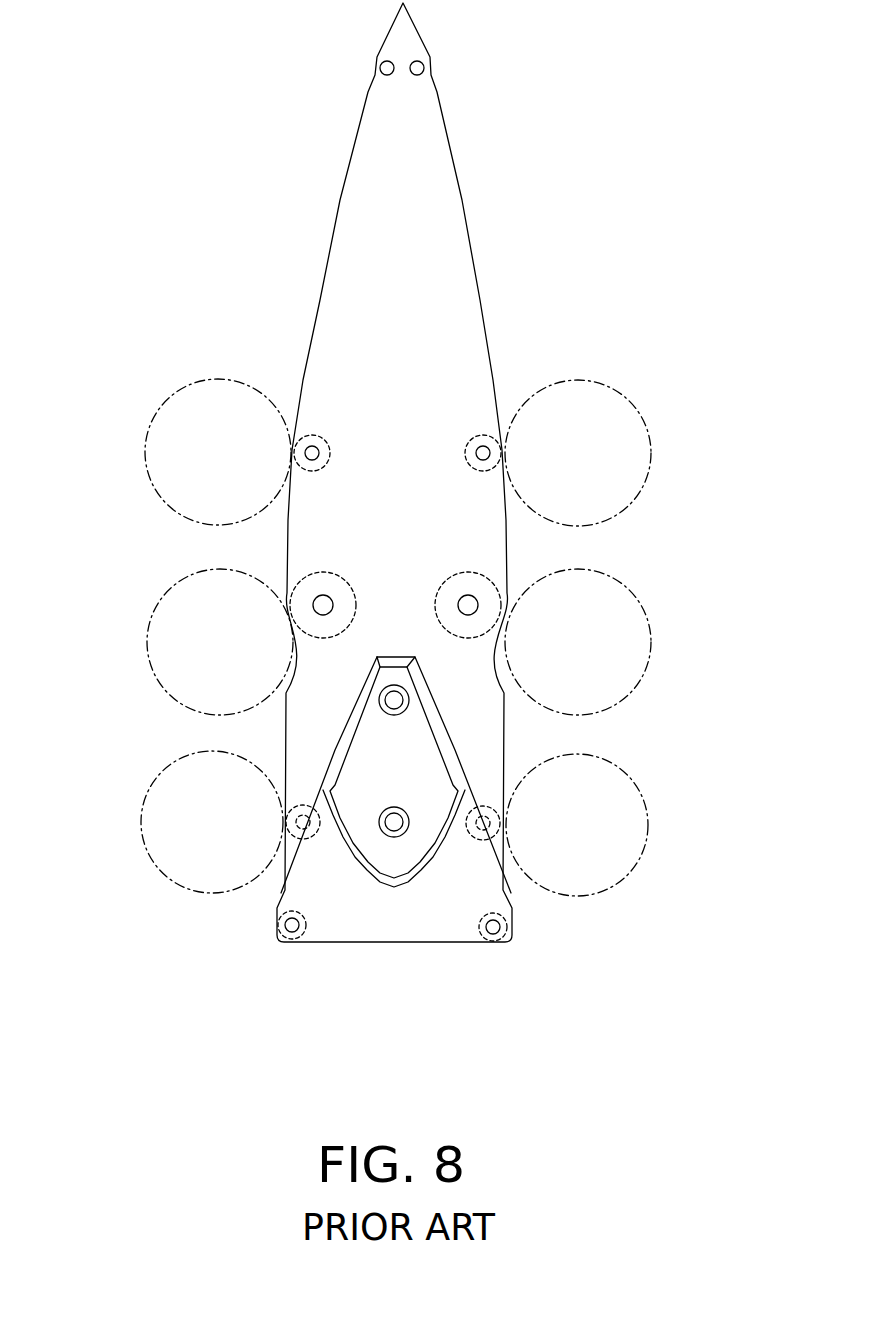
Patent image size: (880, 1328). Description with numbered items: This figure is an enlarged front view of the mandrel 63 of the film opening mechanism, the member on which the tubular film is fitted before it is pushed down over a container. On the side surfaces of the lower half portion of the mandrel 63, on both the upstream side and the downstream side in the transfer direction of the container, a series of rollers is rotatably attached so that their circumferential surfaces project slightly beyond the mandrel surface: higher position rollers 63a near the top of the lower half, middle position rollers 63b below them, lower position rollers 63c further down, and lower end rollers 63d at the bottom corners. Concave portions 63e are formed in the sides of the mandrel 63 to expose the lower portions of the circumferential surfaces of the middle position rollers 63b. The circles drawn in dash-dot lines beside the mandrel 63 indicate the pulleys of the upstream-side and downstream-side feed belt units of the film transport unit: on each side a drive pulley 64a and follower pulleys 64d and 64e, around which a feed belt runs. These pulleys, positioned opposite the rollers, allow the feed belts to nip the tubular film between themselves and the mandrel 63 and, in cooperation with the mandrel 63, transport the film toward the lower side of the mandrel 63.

The mandrel 63 is at (418, 318).
The higher position rollers 63a is at (316, 435).
The middle position rollers 63b is at (330, 572).
The lower position rollers 63c is at (308, 840).
The lower end rollers 63d is at (306, 944).
The concave portions 63e is at (298, 640).
The drive pulley 64a is at (141, 823).
The follower pulley 64d is at (145, 452).
The follower pulley 64e is at (147, 643).